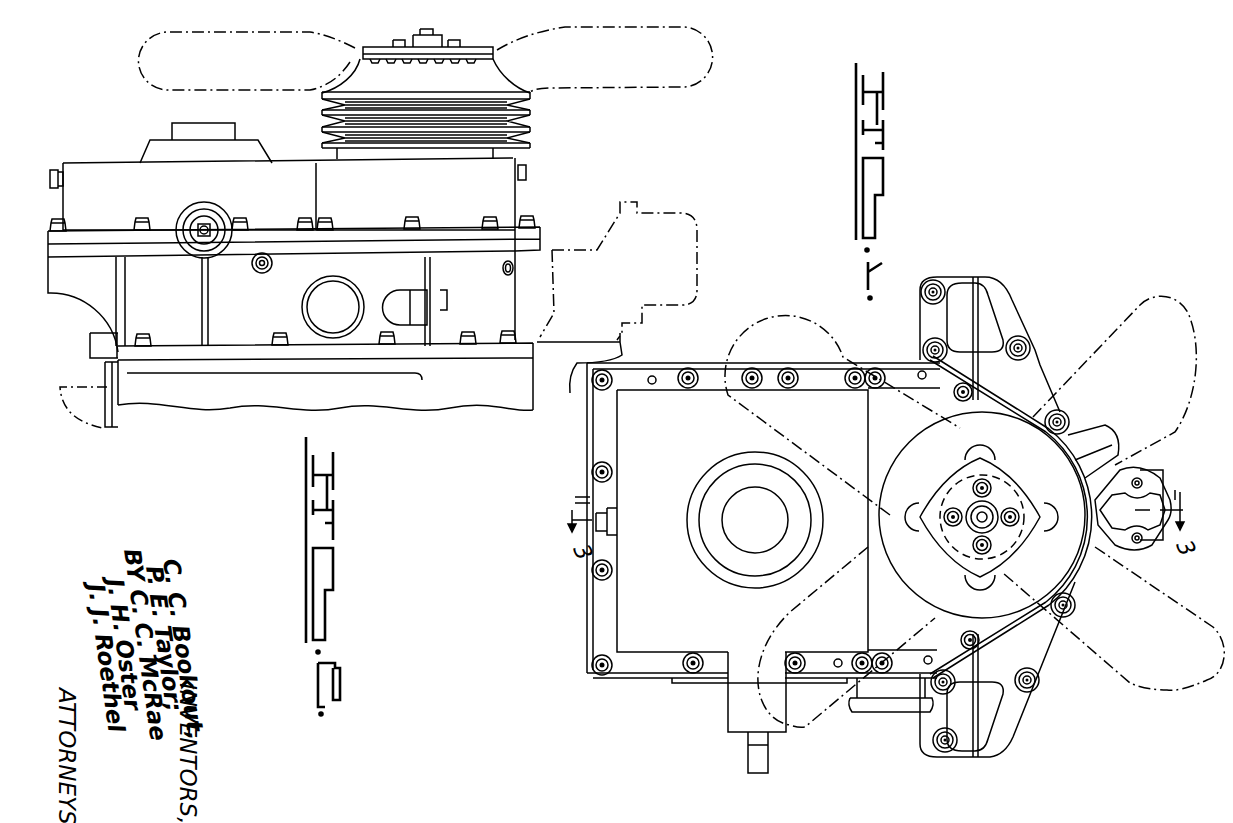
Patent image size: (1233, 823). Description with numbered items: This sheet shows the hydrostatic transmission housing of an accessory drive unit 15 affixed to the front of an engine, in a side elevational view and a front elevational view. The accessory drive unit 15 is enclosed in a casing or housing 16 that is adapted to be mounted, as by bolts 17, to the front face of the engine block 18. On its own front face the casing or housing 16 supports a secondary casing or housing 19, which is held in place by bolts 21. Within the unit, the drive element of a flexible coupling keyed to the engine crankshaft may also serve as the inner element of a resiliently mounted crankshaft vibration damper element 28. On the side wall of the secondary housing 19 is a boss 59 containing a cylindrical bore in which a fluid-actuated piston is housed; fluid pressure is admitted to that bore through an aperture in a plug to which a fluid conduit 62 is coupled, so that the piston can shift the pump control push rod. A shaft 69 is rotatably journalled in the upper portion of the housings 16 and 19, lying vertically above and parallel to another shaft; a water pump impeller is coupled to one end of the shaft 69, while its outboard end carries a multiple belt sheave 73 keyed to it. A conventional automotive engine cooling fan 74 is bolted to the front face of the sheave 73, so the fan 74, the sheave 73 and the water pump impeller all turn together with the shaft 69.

In FIG. 1, the accessory drive unit 15 is at (129, 139).
In FIG. 1, the casing or housing 16 is at (445, 272).
In FIG. 2, the casing or housing 16 is at (933, 303).
In FIG. 1, the bolts 17 is at (506, 328).
In FIG. 2, the bolts 17 is at (935, 280).
In FIG. 1, the engine block 18 is at (380, 400).
In FIG. 1, the secondary casing or housing 19 is at (513, 185).
In FIG. 2, the secondary casing or housing 19 is at (658, 588).
In FIG. 1, the bolts 21 is at (412, 217).
In FIG. 2, the bolts 21 is at (691, 675).
In FIG. 1, the crankshaft vibration damper element 28 is at (90, 340).
In FIG. 1, the boss 59 is at (199, 212).
In FIG. 2, the boss 59 is at (737, 717).
In FIG. 1, the fluid conduit 62 is at (200, 231).
In FIG. 2, the fluid conduit 62 is at (764, 760).
In FIG. 1, the shaft 69 is at (433, 27).
In FIG. 2, the shaft 69 is at (972, 533).
In FIG. 1, the multiple belt sheave 73 is at (530, 123).
In FIG. 2, the multiple belt sheave 73 is at (1010, 420).
In FIG. 1, the engine cooling fan 74 is at (633, 85).
In FIG. 2, the engine cooling fan 74 is at (1133, 688).